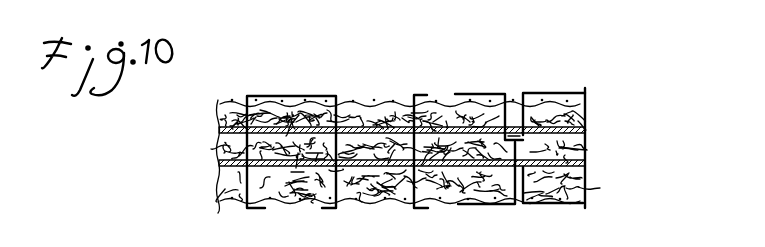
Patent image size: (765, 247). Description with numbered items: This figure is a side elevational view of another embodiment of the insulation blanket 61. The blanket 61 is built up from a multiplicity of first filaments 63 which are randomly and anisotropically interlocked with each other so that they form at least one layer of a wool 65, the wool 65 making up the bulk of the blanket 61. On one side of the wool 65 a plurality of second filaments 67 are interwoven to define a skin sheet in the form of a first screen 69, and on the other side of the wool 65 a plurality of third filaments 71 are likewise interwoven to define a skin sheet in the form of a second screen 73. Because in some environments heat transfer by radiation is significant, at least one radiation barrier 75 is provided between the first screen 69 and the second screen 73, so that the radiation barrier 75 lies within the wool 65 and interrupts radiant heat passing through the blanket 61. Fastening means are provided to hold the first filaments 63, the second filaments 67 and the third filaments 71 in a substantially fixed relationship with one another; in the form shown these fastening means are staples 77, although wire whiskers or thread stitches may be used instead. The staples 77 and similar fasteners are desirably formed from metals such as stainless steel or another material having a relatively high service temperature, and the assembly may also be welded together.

The blanket 61 is at (577, 72).
The first filaments 63 is at (222, 120).
The wool 65 is at (586, 100).
The second filaments 67 is at (393, 102).
The first screen 69 is at (230, 95).
The third filaments 71 is at (560, 195).
The second screen 73 is at (588, 192).
The radiation barrier 75 is at (560, 165).
The staples 77 is at (292, 97).